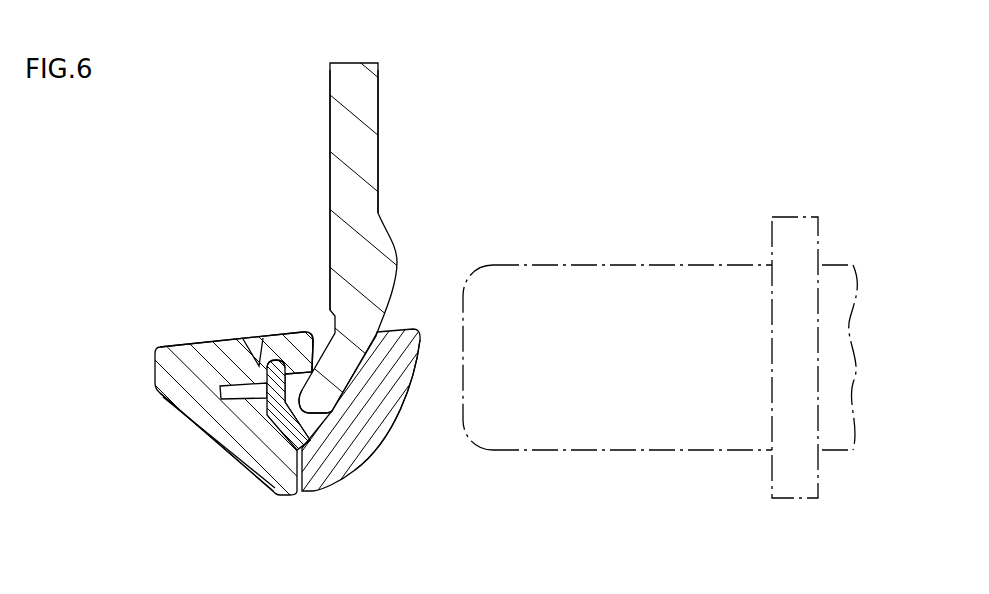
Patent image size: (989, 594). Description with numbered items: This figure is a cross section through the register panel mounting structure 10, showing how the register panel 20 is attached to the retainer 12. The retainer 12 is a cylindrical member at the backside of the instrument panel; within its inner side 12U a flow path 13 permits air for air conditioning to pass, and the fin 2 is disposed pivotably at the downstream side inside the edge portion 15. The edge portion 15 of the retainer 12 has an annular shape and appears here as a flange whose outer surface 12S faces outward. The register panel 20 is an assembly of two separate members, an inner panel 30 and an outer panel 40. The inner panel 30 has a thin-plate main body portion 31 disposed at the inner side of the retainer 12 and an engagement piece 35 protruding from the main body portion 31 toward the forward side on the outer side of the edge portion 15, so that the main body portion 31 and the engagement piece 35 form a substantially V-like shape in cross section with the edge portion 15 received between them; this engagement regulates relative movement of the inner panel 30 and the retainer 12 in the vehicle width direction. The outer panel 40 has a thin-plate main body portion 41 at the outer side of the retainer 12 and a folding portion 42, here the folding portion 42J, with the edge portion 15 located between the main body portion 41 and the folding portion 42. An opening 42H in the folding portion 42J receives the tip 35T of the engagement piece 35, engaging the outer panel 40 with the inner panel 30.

The fin 2 is at (583, 263).
The register panel mounting structure 10 is at (428, 494).
The retainer 12 is at (350, 107).
The inner side 12U is at (378, 130).
The outer surface 12S is at (330, 165).
The flow path 13 is at (672, 164).
The edge portion 15 is at (310, 398).
The register panel 20 is at (390, 547).
The inner panel 30 is at (354, 476).
The main body portion 31 is at (370, 403).
The engagement piece 35 is at (272, 395).
The tip 35T is at (274, 360).
The outer panel 40 is at (238, 475).
The main body portion 41 is at (238, 433).
The folding portions 42 is at (223, 365).
The folding portion 42J is at (299, 357).
The openings 42H is at (256, 356).